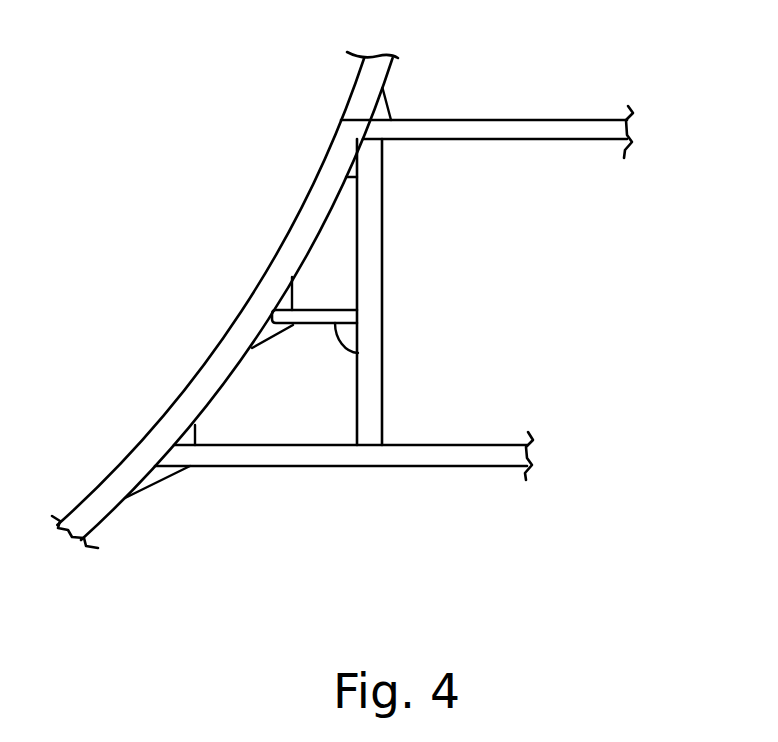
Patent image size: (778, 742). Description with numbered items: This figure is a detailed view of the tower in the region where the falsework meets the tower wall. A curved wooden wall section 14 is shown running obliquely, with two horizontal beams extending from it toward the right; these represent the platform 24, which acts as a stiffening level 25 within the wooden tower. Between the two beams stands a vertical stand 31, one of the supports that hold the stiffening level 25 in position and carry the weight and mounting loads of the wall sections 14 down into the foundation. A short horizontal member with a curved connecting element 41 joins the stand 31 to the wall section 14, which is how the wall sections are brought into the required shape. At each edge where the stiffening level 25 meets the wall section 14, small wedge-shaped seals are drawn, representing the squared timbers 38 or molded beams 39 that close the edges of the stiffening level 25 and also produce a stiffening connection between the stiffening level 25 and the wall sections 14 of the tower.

The wall section 14 is at (230, 361).
The platform 24 is at (416, 344).
The stiffening level 25 is at (560, 139).
The stand 31 is at (386, 304).
The connecting element 41 is at (383, 363).
The squared timber 38 is at (301, 306).
The molded beam 39 is at (384, 96).